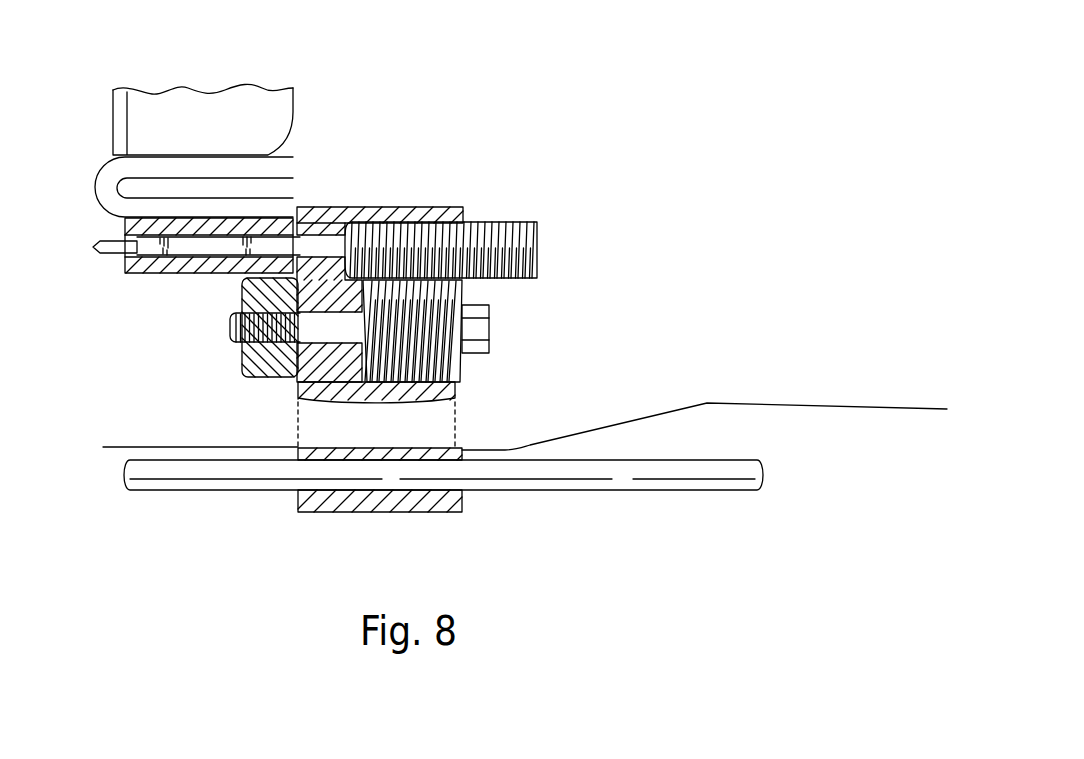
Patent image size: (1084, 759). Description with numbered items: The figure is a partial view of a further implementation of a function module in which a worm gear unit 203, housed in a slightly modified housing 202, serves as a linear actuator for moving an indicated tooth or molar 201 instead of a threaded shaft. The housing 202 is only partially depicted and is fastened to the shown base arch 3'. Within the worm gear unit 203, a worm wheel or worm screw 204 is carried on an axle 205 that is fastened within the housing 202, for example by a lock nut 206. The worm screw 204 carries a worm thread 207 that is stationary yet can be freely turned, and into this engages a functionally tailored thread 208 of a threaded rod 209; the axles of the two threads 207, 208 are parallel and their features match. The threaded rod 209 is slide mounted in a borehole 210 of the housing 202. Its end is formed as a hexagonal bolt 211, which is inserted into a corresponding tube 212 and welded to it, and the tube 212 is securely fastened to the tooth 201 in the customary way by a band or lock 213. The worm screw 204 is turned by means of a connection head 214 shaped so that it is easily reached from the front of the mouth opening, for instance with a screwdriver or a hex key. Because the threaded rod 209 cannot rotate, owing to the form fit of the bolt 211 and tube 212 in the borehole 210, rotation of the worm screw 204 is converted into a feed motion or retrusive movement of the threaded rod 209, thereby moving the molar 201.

The tooth or molar 201 is at (198, 100).
The housing 202 is at (355, 207).
The worm gear unit 203 is at (527, 186).
The worm wheel or worm screw 204 is at (462, 368).
The axle 205 is at (350, 332).
The lock nut 206 is at (240, 360).
The worm thread 207 is at (445, 378).
The thread 208 is at (387, 207).
The threaded rod 209 is at (428, 207).
The borehole 210 is at (322, 207).
The hexagonal bolt 211 is at (208, 248).
The tube 212 is at (158, 273).
The band or lock 213 is at (115, 170).
The connection head 214 is at (483, 323).
The base arch 3' is at (525, 486).